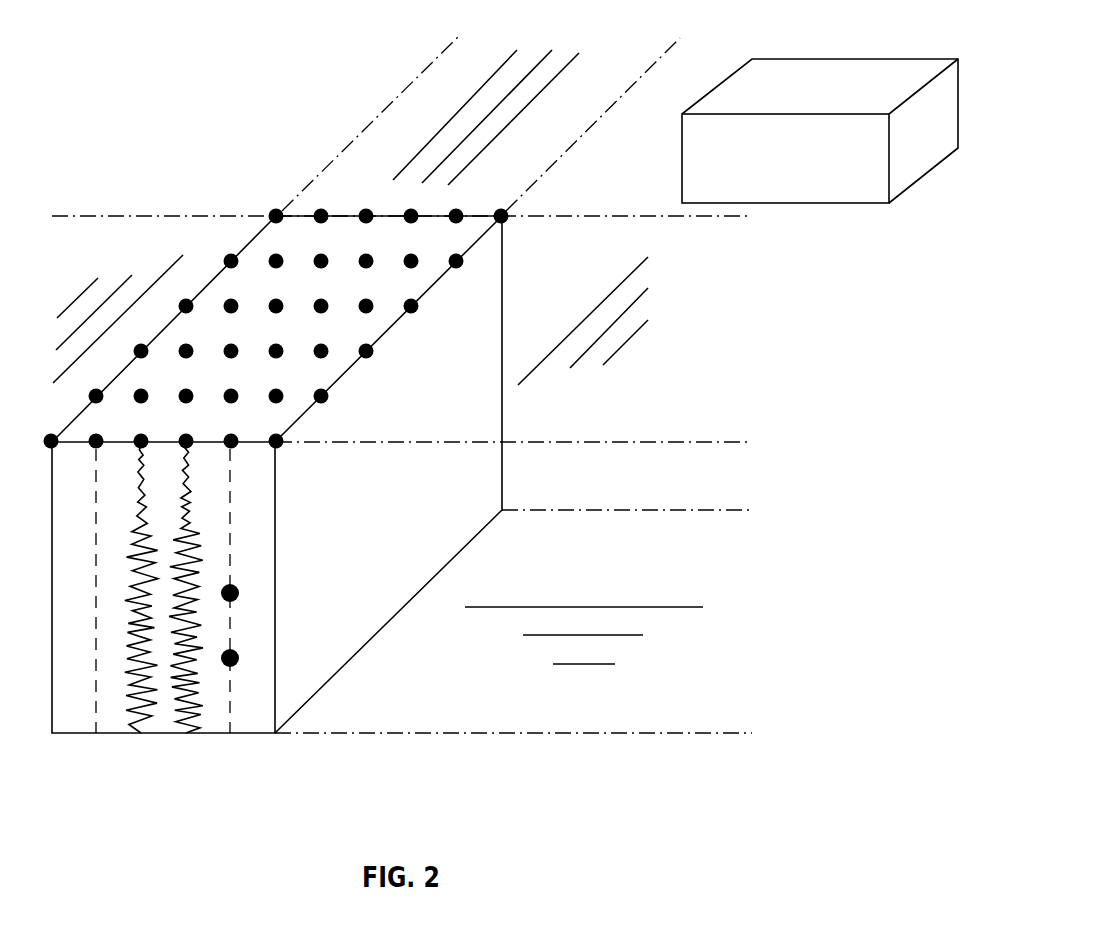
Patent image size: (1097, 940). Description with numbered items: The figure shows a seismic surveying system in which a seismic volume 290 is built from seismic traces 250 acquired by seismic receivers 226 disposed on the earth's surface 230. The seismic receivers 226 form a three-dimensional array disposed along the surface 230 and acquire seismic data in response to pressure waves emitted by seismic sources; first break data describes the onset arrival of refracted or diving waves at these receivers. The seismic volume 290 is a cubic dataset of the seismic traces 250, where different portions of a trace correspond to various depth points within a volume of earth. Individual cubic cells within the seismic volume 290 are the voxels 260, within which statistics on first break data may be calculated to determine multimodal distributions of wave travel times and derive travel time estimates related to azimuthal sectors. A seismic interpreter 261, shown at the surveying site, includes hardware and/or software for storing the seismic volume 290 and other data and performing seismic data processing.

The seismic receivers 226 is at (317, 204).
The surface 230 is at (713, 415).
The seismic traces 250 is at (206, 737).
The voxels 260 is at (242, 590).
The seismic interpreter 261 is at (846, 177).
The seismic volume 290 is at (387, 562).